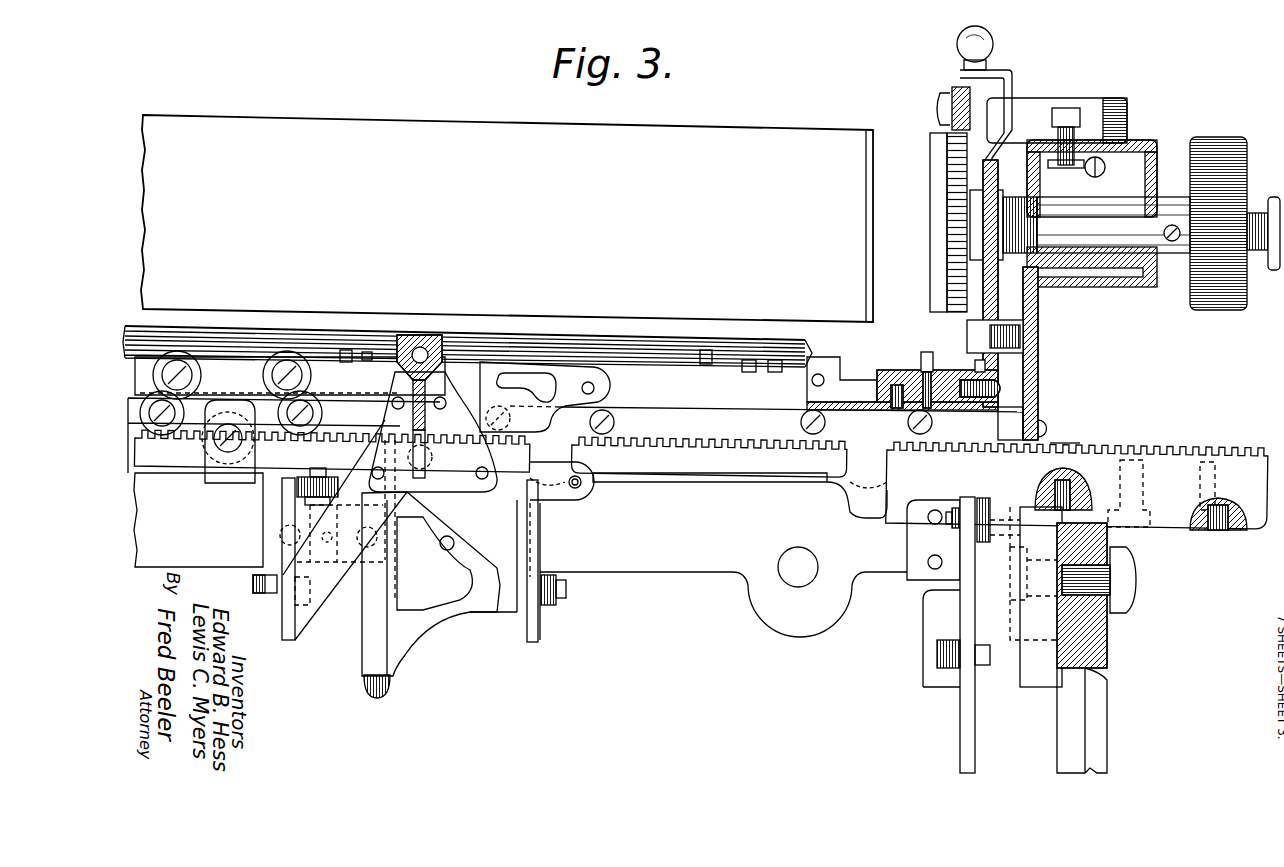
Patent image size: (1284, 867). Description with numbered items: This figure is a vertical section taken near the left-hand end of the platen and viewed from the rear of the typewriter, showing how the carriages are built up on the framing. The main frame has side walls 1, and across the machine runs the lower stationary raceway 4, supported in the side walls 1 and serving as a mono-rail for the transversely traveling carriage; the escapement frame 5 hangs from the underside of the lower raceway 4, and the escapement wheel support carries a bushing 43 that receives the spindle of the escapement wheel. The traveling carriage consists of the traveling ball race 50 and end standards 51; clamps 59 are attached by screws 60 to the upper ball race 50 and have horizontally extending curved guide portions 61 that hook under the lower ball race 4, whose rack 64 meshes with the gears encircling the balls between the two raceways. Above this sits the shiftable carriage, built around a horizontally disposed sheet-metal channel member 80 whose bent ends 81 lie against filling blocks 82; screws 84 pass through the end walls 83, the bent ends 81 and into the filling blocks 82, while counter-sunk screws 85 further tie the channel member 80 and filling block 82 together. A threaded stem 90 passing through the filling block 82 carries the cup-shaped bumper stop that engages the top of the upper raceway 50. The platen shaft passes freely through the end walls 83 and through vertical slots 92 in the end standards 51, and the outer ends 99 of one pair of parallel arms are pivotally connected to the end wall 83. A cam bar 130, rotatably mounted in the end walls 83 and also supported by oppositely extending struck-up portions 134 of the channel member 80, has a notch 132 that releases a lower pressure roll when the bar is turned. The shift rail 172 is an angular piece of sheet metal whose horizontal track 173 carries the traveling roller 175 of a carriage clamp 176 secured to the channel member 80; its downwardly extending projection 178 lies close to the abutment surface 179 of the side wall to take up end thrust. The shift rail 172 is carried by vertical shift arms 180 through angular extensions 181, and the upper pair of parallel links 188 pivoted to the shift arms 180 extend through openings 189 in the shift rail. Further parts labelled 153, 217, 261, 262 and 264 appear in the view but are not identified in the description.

The side walls 1 is at (1092, 715).
The lower stationary raceway 4 is at (1112, 437).
The escapement frame 5 is at (532, 643).
The bushing 43 is at (430, 350).
The traveling ball race 50 is at (766, 419).
The end standards 51 is at (1040, 340).
The clamps 59 is at (563, 452).
The screws 60 is at (817, 416).
The guide portions 61 is at (864, 489).
The rack 64 is at (1070, 447).
The channel member 80 is at (850, 390).
The bent ends 81 is at (978, 365).
The filling blocks 82 is at (893, 378).
The end walls 83 is at (998, 290).
The screws 84 is at (1003, 387).
The counter-sunk screws 85 is at (890, 408).
The threaded stem 90 is at (928, 353).
The vertical slots 92 is at (1038, 180).
The outer ends 99 is at (1024, 328).
The cam bar 130 is at (812, 348).
The cam portion or notch 132 is at (705, 350).
The struck-up portions 134 is at (373, 353).
The lever 153 is at (425, 432).
The shift rail 172 is at (597, 573).
The horizontal track 173 is at (660, 468).
The traveling roller 175 is at (270, 378).
The carriage clamp 176 is at (204, 375).
The downwardly extending projection 178 is at (1038, 688).
The abutment surfaces 179 is at (1057, 650).
The vertical shift arms 180 is at (960, 730).
The angular extensions 181 is at (920, 565).
The upper pair of parallel links 188 is at (982, 548).
The openings 189 is at (972, 535).
The bracket 217 is at (930, 632).
The clamp 261 is at (315, 460).
The plate 262 is at (324, 530).
The lever 264 is at (545, 397).